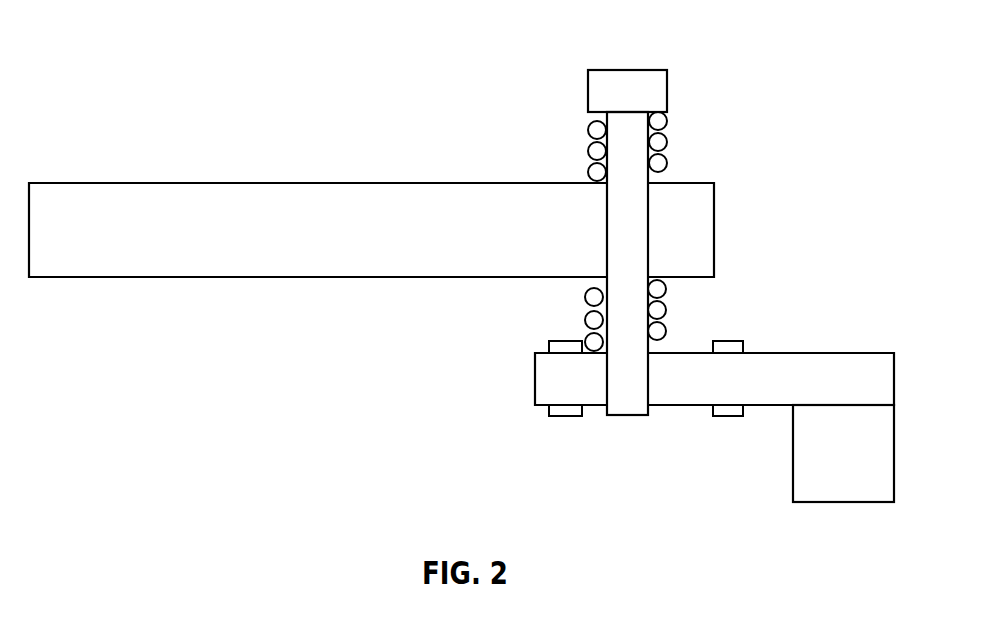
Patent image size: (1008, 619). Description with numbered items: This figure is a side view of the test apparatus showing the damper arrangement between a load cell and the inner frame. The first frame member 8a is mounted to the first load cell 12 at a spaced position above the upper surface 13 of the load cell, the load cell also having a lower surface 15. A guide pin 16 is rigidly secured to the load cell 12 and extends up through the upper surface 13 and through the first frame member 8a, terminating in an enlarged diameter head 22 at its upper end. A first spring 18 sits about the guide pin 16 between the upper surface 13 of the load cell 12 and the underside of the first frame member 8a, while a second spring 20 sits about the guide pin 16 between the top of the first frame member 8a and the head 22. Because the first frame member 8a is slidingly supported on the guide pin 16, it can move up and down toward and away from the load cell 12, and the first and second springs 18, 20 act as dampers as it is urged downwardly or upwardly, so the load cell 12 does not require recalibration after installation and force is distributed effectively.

The first frame member 8a is at (337, 183).
The enlarged diameter head 22 is at (625, 70).
The guide pin 16 is at (640, 239).
The first spring 18 is at (667, 144).
The second spring 20 is at (590, 298).
The first load cell 12 is at (794, 355).
The lower surface 15 is at (677, 406).
The upper surface 13 is at (847, 355).